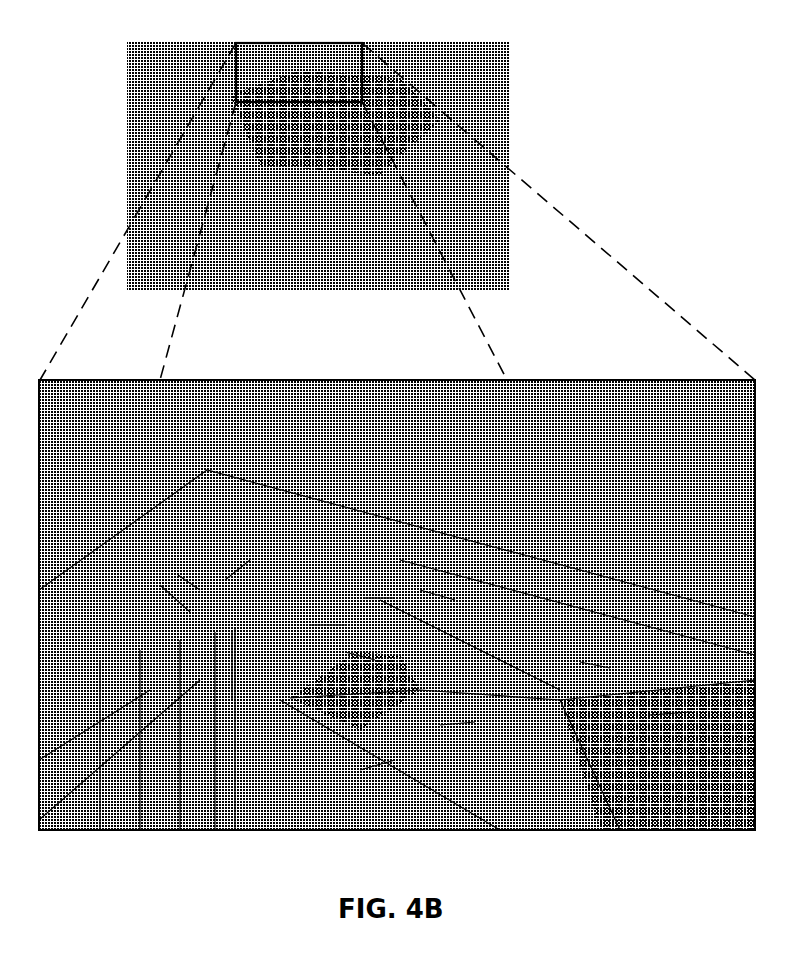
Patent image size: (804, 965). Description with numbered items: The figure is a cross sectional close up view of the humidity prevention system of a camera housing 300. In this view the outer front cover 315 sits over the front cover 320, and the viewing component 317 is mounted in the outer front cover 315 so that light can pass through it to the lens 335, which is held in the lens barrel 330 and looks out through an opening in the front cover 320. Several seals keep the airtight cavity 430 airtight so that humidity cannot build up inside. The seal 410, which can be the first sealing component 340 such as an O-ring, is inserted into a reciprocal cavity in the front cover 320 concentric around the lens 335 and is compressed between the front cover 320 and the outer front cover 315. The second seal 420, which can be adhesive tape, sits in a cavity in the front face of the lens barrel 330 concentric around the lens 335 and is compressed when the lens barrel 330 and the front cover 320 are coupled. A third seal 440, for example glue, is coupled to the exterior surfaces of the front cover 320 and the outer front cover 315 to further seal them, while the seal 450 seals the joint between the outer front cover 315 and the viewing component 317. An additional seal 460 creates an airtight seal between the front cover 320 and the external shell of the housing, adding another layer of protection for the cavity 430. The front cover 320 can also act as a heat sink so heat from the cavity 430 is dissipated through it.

The camera housing 300 is at (318, 150).
The outer front cover 315 is at (232, 577).
The viewing component 317 is at (437, 587).
The front cover 320 is at (177, 602).
The lens barrel 330 is at (360, 775).
The lens 335 is at (665, 710).
The first sealing component 340 is at (360, 647).
The seal 410 is at (327, 620).
The second seal 420 is at (455, 720).
The airtight cavity 430 is at (592, 657).
The third seal 440 is at (185, 577).
The seal 450 is at (375, 592).
The seal 460 is at (227, 628).